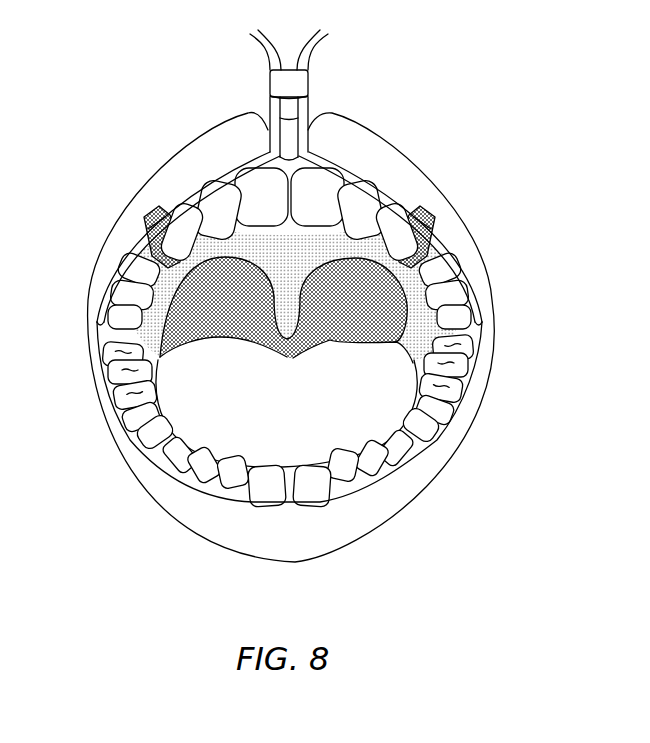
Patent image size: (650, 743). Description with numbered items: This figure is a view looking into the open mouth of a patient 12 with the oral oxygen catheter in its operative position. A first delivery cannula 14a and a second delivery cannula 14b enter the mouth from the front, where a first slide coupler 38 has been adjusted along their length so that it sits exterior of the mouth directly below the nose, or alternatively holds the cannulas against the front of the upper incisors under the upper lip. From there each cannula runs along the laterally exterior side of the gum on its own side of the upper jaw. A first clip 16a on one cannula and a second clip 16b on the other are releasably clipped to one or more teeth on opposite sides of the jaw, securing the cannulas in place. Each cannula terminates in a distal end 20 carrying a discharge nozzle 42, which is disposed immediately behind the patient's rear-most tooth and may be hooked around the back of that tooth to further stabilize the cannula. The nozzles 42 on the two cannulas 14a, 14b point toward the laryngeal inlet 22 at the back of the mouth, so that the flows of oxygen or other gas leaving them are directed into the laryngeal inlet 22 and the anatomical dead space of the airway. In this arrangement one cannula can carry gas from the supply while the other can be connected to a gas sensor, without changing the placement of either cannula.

The patient 12 is at (193, 418).
The first delivery cannula 14a is at (112, 274).
The second delivery cannula 14b is at (355, 176).
The first clip 16a is at (155, 216).
The second clip 16b is at (424, 216).
The distal end 20 is at (120, 328).
The laryngeal inlet 22 is at (289, 347).
The first slide coupler 38 is at (270, 87).
The discharge nozzle 42 is at (94, 322).